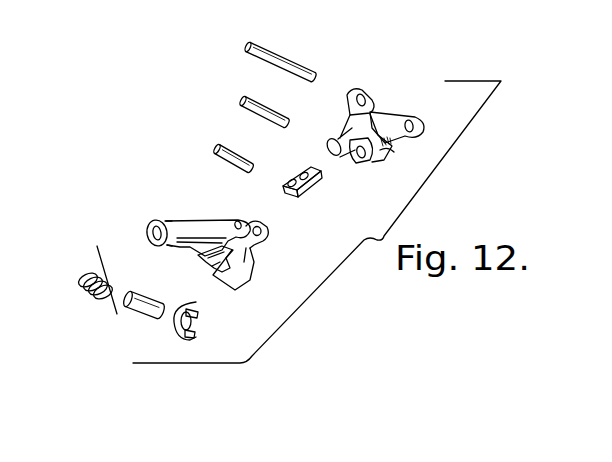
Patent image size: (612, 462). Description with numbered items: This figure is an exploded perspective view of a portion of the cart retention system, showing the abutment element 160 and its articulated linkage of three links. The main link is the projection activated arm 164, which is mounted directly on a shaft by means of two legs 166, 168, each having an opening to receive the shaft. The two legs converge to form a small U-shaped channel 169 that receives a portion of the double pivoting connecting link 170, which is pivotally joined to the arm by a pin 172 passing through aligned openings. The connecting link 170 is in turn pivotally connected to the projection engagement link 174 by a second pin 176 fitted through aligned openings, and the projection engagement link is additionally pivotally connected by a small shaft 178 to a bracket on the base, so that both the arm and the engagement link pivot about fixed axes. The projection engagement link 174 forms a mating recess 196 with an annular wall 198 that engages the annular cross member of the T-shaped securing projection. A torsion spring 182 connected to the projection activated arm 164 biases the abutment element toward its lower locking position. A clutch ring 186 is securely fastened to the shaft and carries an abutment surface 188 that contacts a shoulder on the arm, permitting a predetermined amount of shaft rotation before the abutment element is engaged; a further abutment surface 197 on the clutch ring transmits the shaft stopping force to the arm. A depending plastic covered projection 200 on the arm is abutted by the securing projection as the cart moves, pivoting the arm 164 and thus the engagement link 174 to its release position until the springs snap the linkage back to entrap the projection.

The abutment element 160 is at (162, 124).
The projection activated arm 164 is at (212, 234).
The leg 166 is at (249, 266).
The leg 168 is at (180, 222).
The U-shaped channel 169 is at (243, 223).
The connecting link 170 is at (313, 198).
The pin 172 is at (257, 163).
The projection engagement link 174 is at (341, 147).
The second pin 176 is at (290, 120).
The small shaft 178 is at (318, 72).
The torsion spring 182 is at (85, 296).
The clutch ring 186 is at (182, 307).
The abutment surface 188 is at (199, 345).
The mating recess 196 is at (380, 133).
The abutment surface 197 is at (198, 337).
The annular wall 198 is at (390, 152).
The projection 200 is at (205, 258).